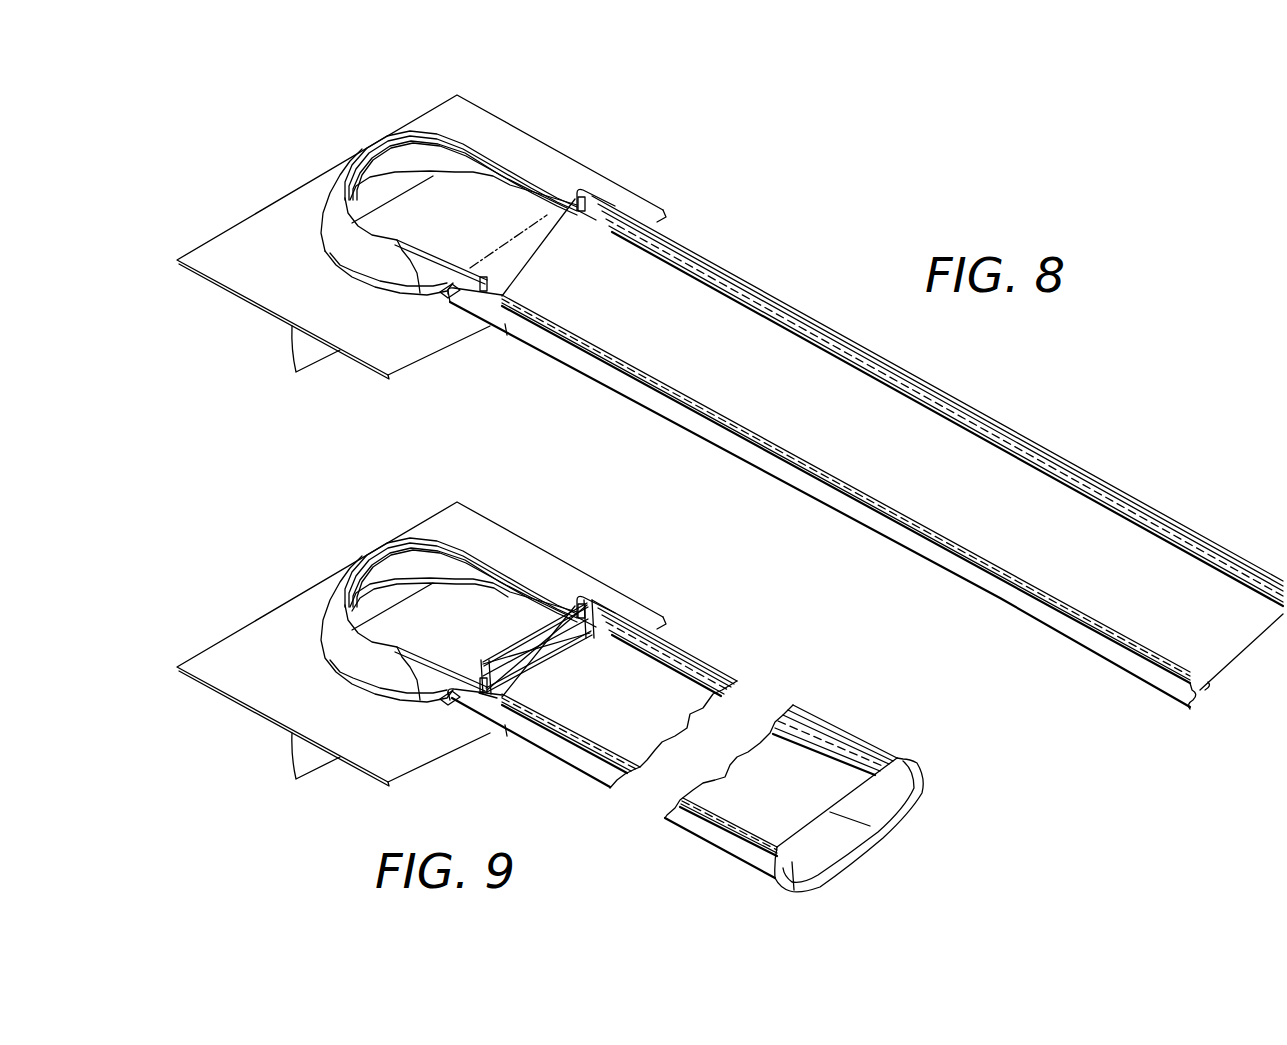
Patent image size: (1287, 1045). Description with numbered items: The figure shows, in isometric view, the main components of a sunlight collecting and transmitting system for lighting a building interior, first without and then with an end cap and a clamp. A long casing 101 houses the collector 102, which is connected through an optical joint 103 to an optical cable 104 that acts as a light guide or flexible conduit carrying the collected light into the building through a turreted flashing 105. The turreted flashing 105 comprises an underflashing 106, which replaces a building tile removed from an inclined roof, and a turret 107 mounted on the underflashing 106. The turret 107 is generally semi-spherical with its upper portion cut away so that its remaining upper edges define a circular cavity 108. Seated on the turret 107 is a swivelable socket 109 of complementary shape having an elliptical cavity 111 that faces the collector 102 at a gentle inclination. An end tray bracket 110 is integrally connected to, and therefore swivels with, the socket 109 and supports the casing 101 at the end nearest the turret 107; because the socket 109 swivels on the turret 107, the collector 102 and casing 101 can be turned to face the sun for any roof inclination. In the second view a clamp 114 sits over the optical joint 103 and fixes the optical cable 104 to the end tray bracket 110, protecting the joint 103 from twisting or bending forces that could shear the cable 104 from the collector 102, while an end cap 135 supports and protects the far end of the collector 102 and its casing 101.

In FIG. 8, the casing 101 is at (1010, 601).
In FIG. 8, the collector 102 is at (1015, 485).
In FIG. 9, the collector 102 is at (678, 690).
In FIG. 8, the optical joint 103 is at (573, 246).
In FIG. 8, the optical cable 104 is at (520, 200).
In FIG. 9, the optical cable 104 is at (515, 600).
In FIG. 8, the turreted flashing 105 is at (238, 188).
In FIG. 8, the underflashing 106 is at (417, 344).
In FIG. 9, the underflashing 106 is at (262, 625).
In FIG. 8, the turret 107 is at (333, 266).
In FIG. 8, the circular cavity 108 is at (371, 198).
In FIG. 8, the swivelable socket 109 is at (337, 225).
In FIG. 8, the end tray bracket 110 is at (433, 278).
In FIG. 9, the end tray bracket 110 is at (490, 733).
In FIG. 8, the elliptical cavity 111 is at (444, 152).
In FIG. 9, the clamp 114 is at (568, 612).
In FIG. 9, the end cap 135 is at (905, 813).